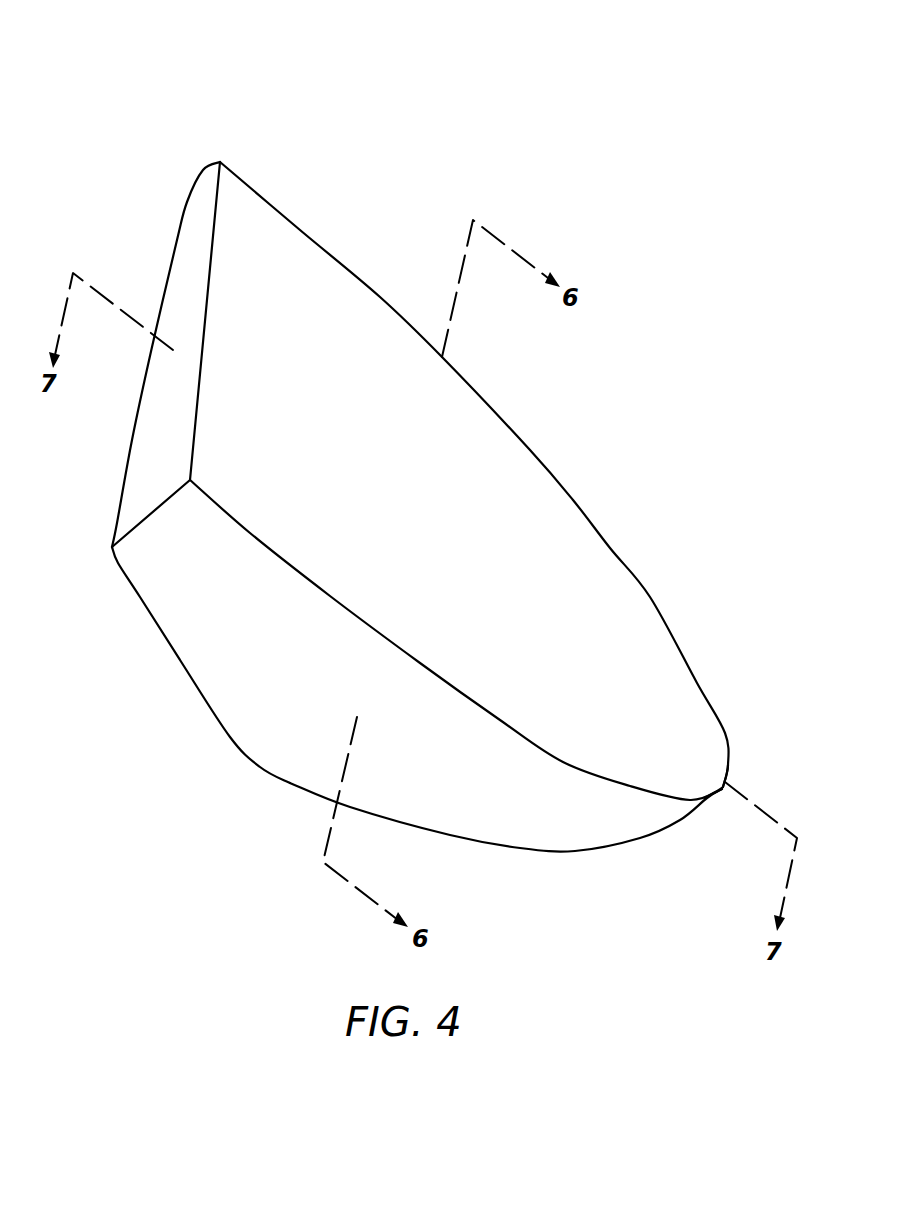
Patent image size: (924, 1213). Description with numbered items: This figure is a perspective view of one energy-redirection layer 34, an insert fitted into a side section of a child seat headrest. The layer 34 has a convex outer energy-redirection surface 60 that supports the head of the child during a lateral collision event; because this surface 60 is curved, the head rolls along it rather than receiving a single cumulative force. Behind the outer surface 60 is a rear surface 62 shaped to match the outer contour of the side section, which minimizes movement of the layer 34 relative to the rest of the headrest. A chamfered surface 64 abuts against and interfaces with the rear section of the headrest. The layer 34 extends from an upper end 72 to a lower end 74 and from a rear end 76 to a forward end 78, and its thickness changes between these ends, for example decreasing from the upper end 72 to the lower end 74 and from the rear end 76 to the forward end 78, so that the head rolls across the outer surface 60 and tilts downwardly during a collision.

The energy-redirection layer 34 is at (392, 483).
The outer energy-redirection surface 60 is at (623, 597).
The rear surface 62 is at (288, 787).
The chamfered surface 64 is at (178, 662).
The upper end 72 is at (373, 296).
The lower end 74 is at (233, 707).
The rear end 76 is at (160, 457).
The forward end 78 is at (722, 790).